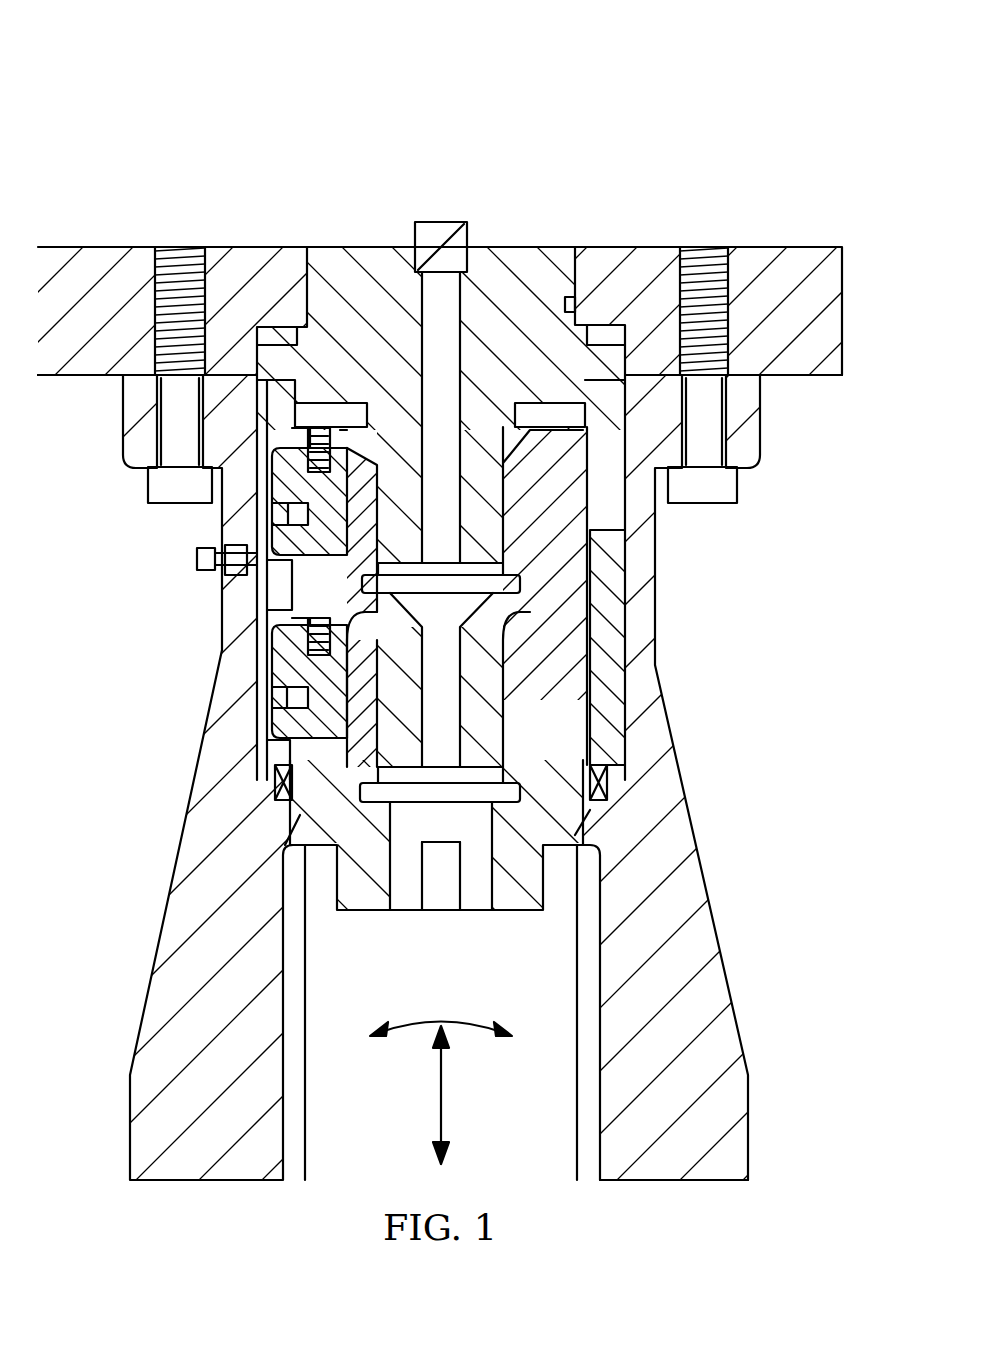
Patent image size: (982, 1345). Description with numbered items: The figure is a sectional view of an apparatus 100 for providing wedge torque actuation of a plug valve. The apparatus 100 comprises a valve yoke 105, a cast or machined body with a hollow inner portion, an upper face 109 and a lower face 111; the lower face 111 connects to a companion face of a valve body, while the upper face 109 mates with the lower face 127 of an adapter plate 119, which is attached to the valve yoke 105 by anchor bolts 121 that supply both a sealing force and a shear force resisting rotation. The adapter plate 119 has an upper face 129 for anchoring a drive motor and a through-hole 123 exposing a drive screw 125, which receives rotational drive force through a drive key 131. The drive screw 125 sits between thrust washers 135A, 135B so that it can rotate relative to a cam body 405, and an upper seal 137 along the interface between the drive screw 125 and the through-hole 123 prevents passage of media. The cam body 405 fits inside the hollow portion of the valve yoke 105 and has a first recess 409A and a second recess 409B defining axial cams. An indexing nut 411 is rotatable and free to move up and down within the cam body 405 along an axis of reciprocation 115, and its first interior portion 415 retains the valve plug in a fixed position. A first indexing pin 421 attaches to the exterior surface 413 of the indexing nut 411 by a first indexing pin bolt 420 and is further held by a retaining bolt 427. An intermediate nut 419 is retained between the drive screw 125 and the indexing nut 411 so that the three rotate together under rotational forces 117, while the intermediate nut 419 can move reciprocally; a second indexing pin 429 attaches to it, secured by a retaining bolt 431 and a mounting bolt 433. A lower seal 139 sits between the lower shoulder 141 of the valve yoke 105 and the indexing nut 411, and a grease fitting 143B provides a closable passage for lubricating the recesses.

The apparatus 100 is at (264, 82).
The valve yoke 105 is at (660, 720).
The upper face 109 is at (740, 370).
The lower face 111 is at (700, 1182).
The axis of reciprocation 115 is at (444, 1090).
The rotational forces 117 is at (466, 1018).
The adapter plate 119 is at (790, 255).
The anchor bolts 121 is at (738, 490).
The through-hole 123 is at (318, 247).
The drive screw 125 is at (515, 257).
The lower face 127 is at (72, 378).
The upper face 129 is at (100, 247).
The drive key 131 is at (437, 240).
The thrust washer 135A is at (262, 333).
The thrust washer 135B is at (235, 400).
The upper seal 137 is at (575, 300).
The lower seal 139 is at (605, 785).
The lower shoulder 141 is at (282, 770).
The grease fitting 143B is at (198, 556).
The cam body 405 is at (612, 628).
The first recess 409A is at (262, 735).
The second recess 409B is at (255, 578).
The indexing nut 411 is at (515, 912).
The exterior surface 413 is at (585, 822).
The first interior portion 415 is at (400, 915).
The intermediate nut 419 is at (575, 520).
The first indexing pin bolt 420 is at (290, 697).
The first indexing pin 421 is at (290, 668).
The retaining bolt 427 is at (318, 640).
The second indexing pin 429 is at (272, 482).
The retaining bolt 431 is at (322, 440).
The mounting bolt 433 is at (290, 512).